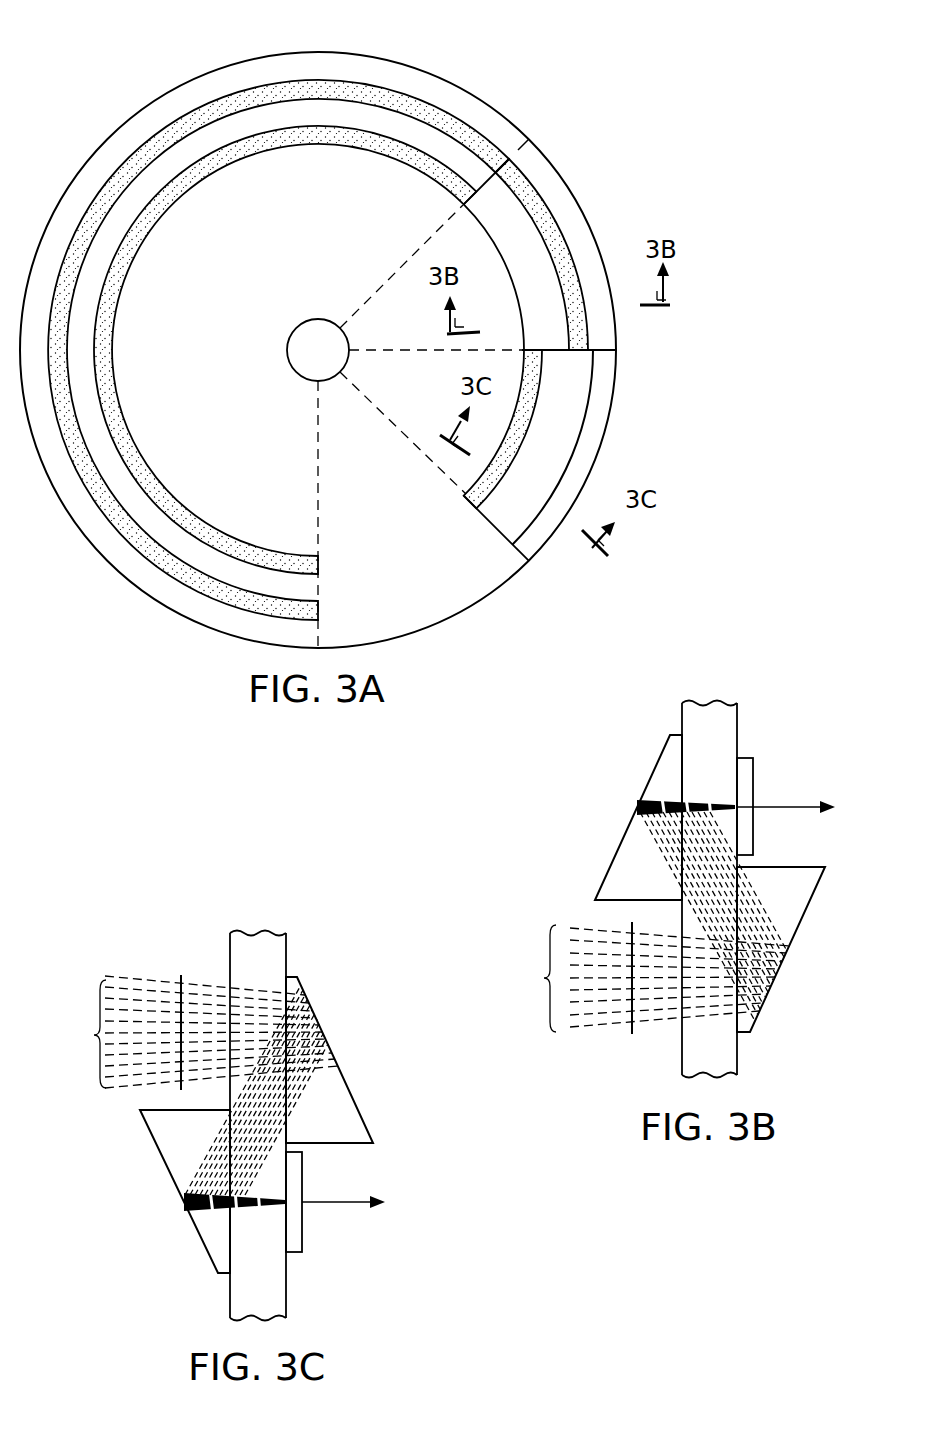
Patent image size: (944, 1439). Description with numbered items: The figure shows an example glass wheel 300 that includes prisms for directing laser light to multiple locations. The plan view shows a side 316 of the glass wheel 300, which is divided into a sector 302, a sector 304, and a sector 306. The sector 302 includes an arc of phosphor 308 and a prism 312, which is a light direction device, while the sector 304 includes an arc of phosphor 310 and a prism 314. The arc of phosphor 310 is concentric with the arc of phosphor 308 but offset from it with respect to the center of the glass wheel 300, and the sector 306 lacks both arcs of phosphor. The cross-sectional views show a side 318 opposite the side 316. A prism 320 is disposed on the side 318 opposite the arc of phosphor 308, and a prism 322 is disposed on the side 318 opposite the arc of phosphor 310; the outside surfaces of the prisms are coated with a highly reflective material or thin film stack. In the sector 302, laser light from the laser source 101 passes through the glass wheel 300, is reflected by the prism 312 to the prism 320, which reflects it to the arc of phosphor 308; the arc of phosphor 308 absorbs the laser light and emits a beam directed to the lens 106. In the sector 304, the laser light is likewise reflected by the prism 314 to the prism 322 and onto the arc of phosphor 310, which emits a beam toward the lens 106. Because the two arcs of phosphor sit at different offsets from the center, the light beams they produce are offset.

In FIG. 3A, the glass wheel 300 is at (241, 58).
In FIG. 3A, the sector 302 is at (657, 207).
In FIG. 3B, the sector 302 is at (718, 685).
In FIG. 3A, the sector 304 is at (650, 462).
In FIG. 3C, the sector 304 is at (248, 917).
In FIG. 3A, the sector 306 is at (462, 630).
In FIG. 3A, the arc of phosphor 308 is at (527, 188).
In FIG. 3B, the arc of phosphor 308 is at (755, 783).
In FIG. 3A, the arc of phosphor 310 is at (543, 393).
In FIG. 3C, the arc of phosphor 310 is at (302, 1223).
In FIG. 3A, the prism 312 is at (535, 240).
In FIG. 3B, the prism 312 is at (805, 905).
In FIG. 3A, the prism 314 is at (568, 432).
In FIG. 3C, the prism 314 is at (357, 1097).
In FIG. 3A, the side 316 is at (414, 89).
In FIG. 3B, the side 316 is at (737, 1050).
In FIG. 3C, the side 316 is at (286, 1284).
In FIG. 3B, the side 318 is at (682, 1050).
In FIG. 3C, the side 318 is at (230, 1296).
In FIG. 3B, the prism 320 is at (654, 770).
In FIG. 3C, the prism 322 is at (168, 1168).
In FIG. 3B, the laser source 101 is at (626, 978).
In FIG. 3C, the laser source 101 is at (177, 1032).
In FIG. 3B, the lens 106 is at (814, 811).
In FIG. 3C, the lens 106 is at (370, 1203).